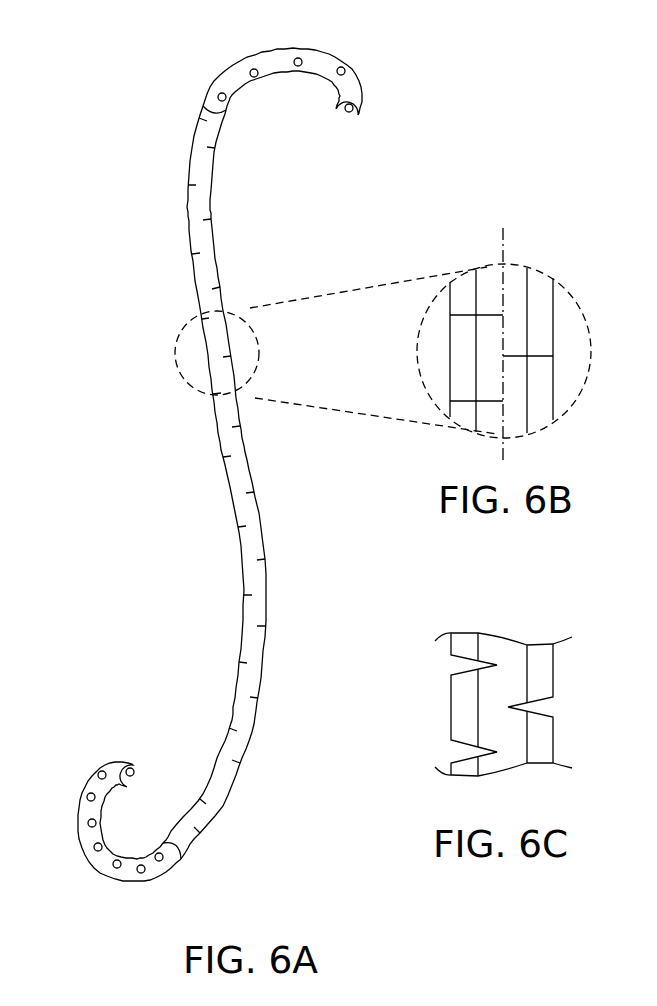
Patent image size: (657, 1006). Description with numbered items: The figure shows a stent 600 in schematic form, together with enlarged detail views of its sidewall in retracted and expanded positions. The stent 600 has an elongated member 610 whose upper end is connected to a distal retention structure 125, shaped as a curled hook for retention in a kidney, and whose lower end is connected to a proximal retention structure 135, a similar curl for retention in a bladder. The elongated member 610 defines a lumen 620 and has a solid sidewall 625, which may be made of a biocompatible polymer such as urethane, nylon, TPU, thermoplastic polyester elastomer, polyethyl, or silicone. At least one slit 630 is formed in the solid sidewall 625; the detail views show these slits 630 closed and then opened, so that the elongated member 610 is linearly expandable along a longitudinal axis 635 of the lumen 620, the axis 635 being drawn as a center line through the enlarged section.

In FIG. 6A, the stent 600 is at (84, 136).
In FIG. 6A, the distal retention structure 125 is at (249, 60).
In FIG. 6A, the proximal retention structure 135 is at (78, 835).
In FIG. 6A, the elongated member 610 is at (228, 472).
In FIG. 6B, the lumen 620 is at (515, 300).
In FIG. 6B, the solid sidewall 625 is at (465, 290).
In FIG. 6B, the slit 630 is at (452, 318).
In FIG. 6C, the slit 630 is at (452, 664).
In FIG. 6B, the longitudinal axis 635 is at (504, 233).